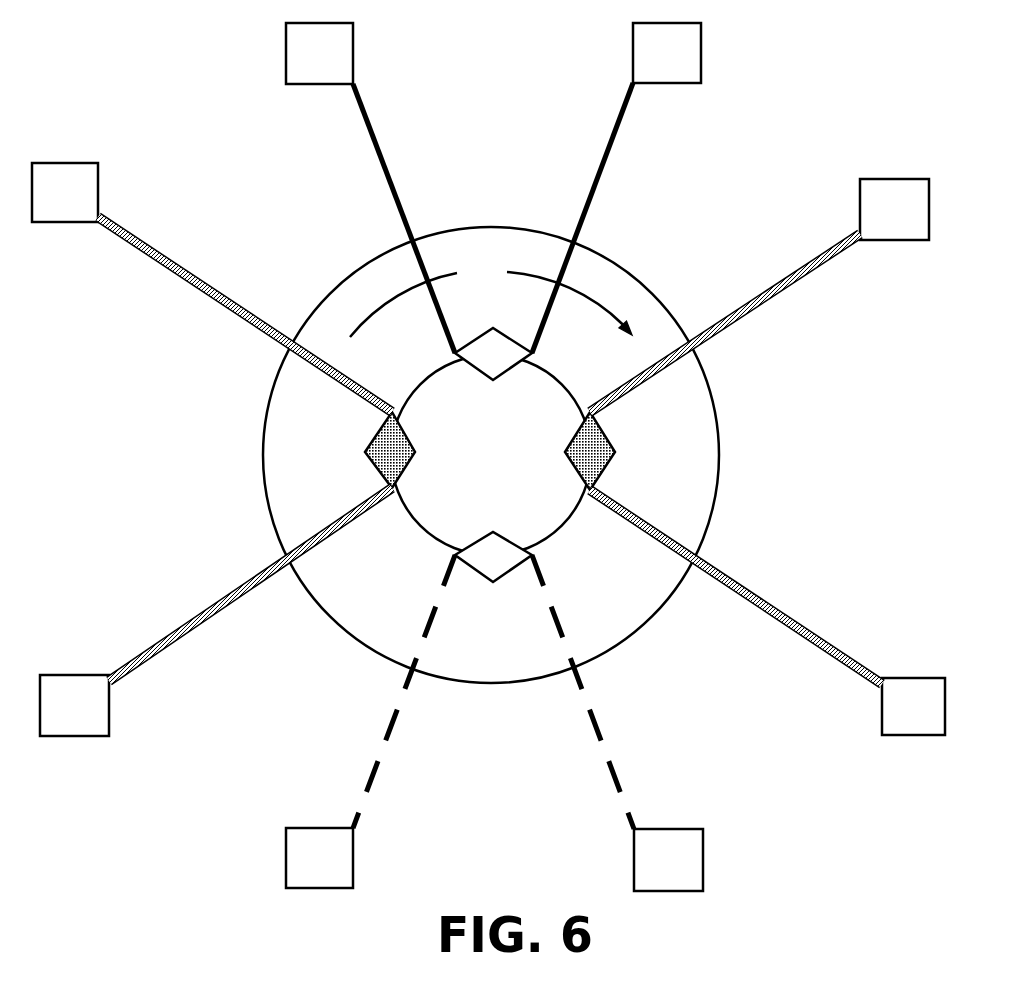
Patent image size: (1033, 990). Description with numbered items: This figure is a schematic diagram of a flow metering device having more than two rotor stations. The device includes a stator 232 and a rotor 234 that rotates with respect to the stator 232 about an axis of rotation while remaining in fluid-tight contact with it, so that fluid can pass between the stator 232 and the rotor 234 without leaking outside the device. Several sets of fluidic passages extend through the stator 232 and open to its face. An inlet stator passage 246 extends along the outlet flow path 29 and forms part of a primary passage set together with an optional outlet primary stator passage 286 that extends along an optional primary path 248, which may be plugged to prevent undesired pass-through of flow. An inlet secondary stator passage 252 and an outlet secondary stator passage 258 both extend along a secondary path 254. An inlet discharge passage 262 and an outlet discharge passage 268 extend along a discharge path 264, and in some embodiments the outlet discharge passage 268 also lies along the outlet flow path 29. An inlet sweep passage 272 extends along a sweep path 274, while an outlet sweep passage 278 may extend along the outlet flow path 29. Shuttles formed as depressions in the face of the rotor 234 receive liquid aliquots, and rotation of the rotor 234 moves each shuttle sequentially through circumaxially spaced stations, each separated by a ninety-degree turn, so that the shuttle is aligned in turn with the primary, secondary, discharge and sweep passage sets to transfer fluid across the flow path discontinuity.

The stator 232 is at (330, 287).
The rotor 234 is at (475, 463).
The inlet secondary stator passage 252 is at (298, 68).
The outlet secondary stator passage 258 is at (645, 68).
The secondary path 254 is at (385, 176).
The outlet primary stator passage 286 is at (43, 206).
The primary path 248 is at (183, 278).
The inlet discharge passage 262 is at (872, 223).
The discharge path 264 is at (740, 306).
The inlet stator passage 246 is at (53, 719).
The outlet flow path 29 is at (185, 634).
The outlet discharge passage 268 is at (892, 719).
The outlet sweep passage 278 is at (298, 872).
The inlet sweep passage 272 is at (646, 873).
The sweep path 274 is at (598, 733).